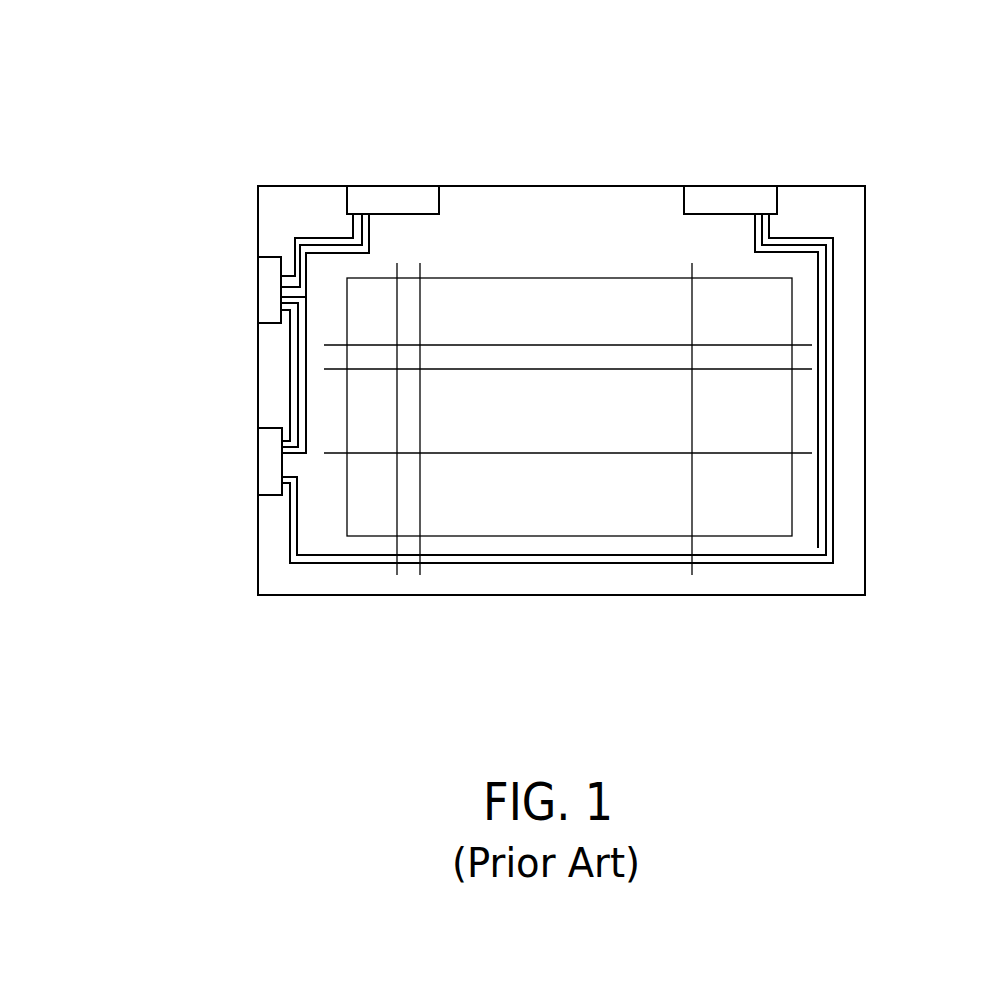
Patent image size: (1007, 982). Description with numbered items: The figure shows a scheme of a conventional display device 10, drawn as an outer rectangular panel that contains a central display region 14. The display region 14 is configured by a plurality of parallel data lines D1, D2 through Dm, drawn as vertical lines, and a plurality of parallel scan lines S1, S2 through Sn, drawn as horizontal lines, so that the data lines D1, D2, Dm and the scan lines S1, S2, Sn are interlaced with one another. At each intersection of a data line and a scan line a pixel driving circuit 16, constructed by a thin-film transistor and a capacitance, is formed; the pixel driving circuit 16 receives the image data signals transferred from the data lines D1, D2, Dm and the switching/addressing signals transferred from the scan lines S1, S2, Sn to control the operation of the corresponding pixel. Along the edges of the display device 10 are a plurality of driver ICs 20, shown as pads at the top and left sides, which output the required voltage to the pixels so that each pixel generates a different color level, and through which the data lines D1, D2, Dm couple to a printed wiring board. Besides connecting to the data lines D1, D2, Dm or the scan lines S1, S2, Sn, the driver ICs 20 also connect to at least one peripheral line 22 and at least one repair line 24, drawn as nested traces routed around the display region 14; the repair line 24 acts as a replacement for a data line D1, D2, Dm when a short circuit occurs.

The display device 10 is at (915, 69).
The display region 14 is at (793, 510).
The pixel driving circuit 16 is at (423, 345).
The driver IC 20 is at (268, 282).
The peripheral line 22 is at (294, 255).
The repair line 24 is at (322, 237).
The scan line S1 is at (652, 319).
The scan line S2 is at (803, 367).
The scan line Sn is at (803, 452).
The data line D1 is at (397, 574).
The data line D2 is at (420, 574).
The data line Dm is at (692, 574).